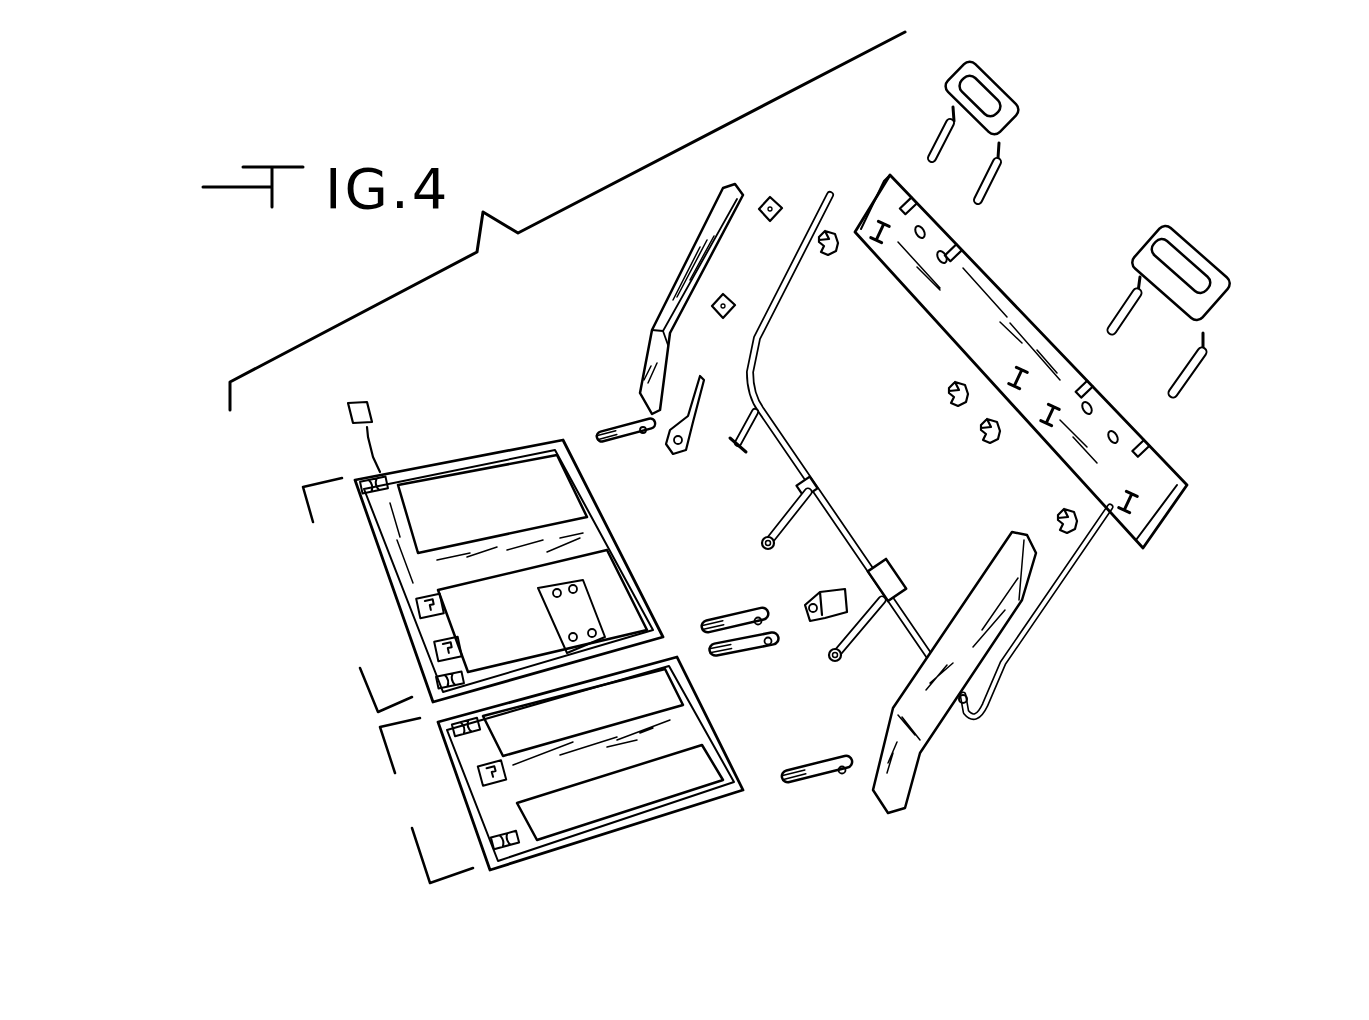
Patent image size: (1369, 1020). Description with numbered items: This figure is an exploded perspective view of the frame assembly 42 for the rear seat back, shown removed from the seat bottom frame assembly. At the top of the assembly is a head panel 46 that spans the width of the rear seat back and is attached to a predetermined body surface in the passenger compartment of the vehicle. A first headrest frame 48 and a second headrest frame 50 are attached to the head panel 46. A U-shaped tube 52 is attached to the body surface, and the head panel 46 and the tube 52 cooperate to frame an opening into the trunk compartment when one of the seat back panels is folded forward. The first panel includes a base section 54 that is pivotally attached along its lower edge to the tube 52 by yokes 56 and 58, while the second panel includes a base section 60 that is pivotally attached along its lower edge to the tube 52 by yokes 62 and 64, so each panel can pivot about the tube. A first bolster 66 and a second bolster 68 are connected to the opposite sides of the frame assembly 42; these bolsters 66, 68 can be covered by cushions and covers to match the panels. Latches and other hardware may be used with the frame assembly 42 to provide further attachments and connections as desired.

The frame assembly 42 is at (315, 278).
The head panel 46 is at (1017, 307).
The first headrest frame 48 is at (1017, 108).
The second headrest frame 50 is at (1210, 258).
The U-shaped tube 52 is at (848, 528).
The base section 54 is at (390, 580).
The yoke 56 is at (618, 440).
The yoke 58 is at (725, 623).
The base section 60 is at (627, 832).
The yoke 62 is at (733, 653).
The yoke 64 is at (810, 782).
The first bolster 66 is at (683, 263).
The second bolster 68 is at (920, 777).